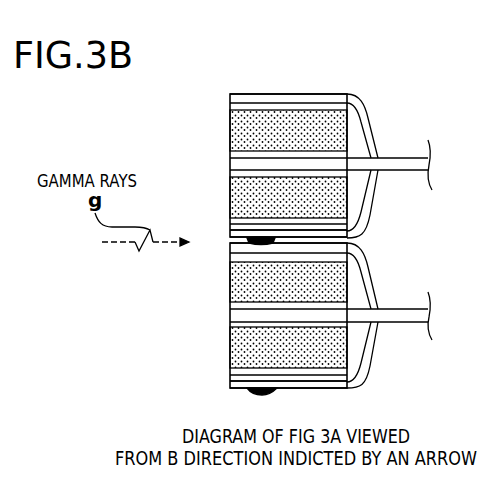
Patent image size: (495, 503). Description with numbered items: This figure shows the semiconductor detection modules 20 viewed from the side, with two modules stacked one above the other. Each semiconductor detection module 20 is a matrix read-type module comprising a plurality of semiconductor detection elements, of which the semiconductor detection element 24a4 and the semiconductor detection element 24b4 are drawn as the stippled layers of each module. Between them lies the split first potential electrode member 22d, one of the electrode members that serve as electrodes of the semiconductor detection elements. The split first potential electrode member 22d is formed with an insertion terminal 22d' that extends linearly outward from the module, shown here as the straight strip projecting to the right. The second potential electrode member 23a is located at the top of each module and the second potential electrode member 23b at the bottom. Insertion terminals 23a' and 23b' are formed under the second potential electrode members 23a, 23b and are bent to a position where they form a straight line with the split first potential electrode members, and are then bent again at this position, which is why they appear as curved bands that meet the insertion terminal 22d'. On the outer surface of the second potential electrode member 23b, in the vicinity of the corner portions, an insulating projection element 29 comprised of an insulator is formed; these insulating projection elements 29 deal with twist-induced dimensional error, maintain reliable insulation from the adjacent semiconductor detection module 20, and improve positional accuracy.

The semiconductor detection module 20 is at (207, 106).
The semiconductor detection element 24a4 is at (230, 132).
The semiconductor detection element 24b4 is at (230, 200).
The split first potential electrode member 22d is at (252, 237).
The insertion terminal 22d' is at (409, 229).
The second potential electrode member 23a is at (315, 156).
The insertion terminal 23a' is at (412, 194).
The second potential electrode member 23b is at (253, 308).
The insertion terminal 23b' is at (401, 279).
The insulating projection element 29 is at (261, 245).